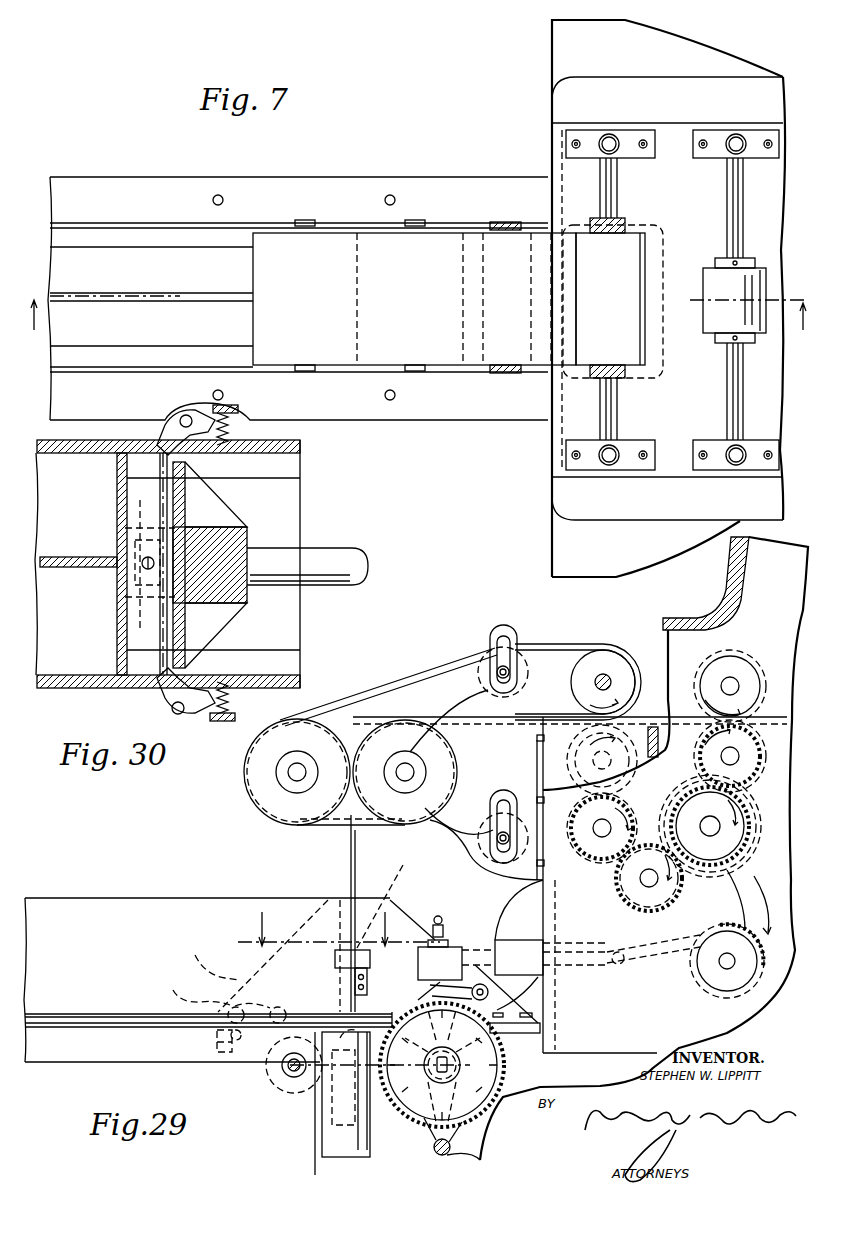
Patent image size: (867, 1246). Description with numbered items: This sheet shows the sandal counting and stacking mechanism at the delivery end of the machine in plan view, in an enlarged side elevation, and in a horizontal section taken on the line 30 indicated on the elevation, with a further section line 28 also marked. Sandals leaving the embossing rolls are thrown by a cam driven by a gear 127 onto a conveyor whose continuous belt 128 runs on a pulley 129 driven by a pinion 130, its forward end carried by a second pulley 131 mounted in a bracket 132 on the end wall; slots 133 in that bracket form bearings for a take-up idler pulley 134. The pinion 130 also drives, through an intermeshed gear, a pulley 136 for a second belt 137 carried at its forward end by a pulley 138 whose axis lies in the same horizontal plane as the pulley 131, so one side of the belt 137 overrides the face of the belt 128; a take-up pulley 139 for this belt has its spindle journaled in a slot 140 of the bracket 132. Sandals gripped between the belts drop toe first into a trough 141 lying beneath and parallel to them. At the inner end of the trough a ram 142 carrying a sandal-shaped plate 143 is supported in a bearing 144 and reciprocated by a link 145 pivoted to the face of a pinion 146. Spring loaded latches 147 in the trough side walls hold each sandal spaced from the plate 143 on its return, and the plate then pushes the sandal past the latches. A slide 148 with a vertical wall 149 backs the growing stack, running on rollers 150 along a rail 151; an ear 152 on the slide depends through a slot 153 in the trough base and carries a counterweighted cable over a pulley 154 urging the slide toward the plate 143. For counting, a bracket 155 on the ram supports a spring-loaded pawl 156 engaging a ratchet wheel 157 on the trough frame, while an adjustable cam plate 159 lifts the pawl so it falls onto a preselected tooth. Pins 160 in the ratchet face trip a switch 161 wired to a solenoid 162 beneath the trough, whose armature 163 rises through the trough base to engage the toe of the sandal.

In FIG. 7, the section line 28 is at (417, 305).
In FIG. 29, the section line 30— 30 is at (338, 929).
In FIG. 29, the gear 127 is at (750, 672).
In FIG. 29, the continuous belt 128 is at (495, 722).
In FIG. 29, the pulley 129 is at (606, 751).
In FIG. 29, the pinion 130 is at (612, 808).
In FIG. 29, the second pulley 131 is at (426, 746).
In FIG. 29, the bracket 132 is at (513, 780).
In FIG. 29, the slots 133 is at (493, 830).
In FIG. 29, the take-up idler pulley 134 is at (518, 870).
In FIG. 29, the pulley 136 is at (580, 692).
In FIG. 29, the belt 137 is at (456, 662).
In FIG. 29, the pulley 138 is at (320, 735).
In FIG. 29, the take-up pulley 139 is at (532, 646).
In FIG. 29, the slot 140 is at (497, 655).
In FIG. 29, the trough 141 is at (218, 898).
In FIG. 30, the ram 142 is at (340, 547).
In FIG. 29, the ram 142 is at (426, 935).
In FIG. 30, the plate 143 is at (180, 508).
In FIG. 29, the plate 143 is at (311, 931).
In FIG. 29, the bearing 144 is at (510, 940).
In FIG. 29, the link 145 is at (650, 965).
In FIG. 29, the pinion 146 is at (740, 991).
In FIG. 30, the spring loaded latches 147 is at (160, 436).
In FIG. 30, the slide 148 is at (62, 570).
In FIG. 29, the slide 148 is at (210, 959).
In FIG. 30, the vertical wall 149 is at (117, 640).
In FIG. 29, the vertical wall 149 is at (335, 983).
In FIG. 29, the rollers 150 is at (223, 996).
In FIG. 7, the rail 151 is at (163, 246).
In FIG. 30, the rail 151 is at (241, 652).
In FIG. 29, the rail 151 is at (190, 1030).
In FIG. 29, the ear 152 is at (214, 1058).
In FIG. 7, the slot 153 is at (87, 298).
In FIG. 29, the pulley 154 is at (280, 1080).
In FIG. 29, the bracket 155 is at (416, 995).
In FIG. 29, the spring-loaded pawl 156 is at (455, 993).
In FIG. 29, the ratchet wheel 157 is at (408, 1118).
In FIG. 29, the cam plate 159 is at (540, 992).
In FIG. 29, the pins 160 is at (470, 1135).
In FIG. 29, the switch 161 is at (370, 1085).
In FIG. 30, the solenoid 162 is at (144, 526).
In FIG. 29, the solenoid 162 is at (332, 1120).
In FIG. 30, the armature 163 is at (147, 600).
In FIG. 29, the armature 163 is at (358, 1041).